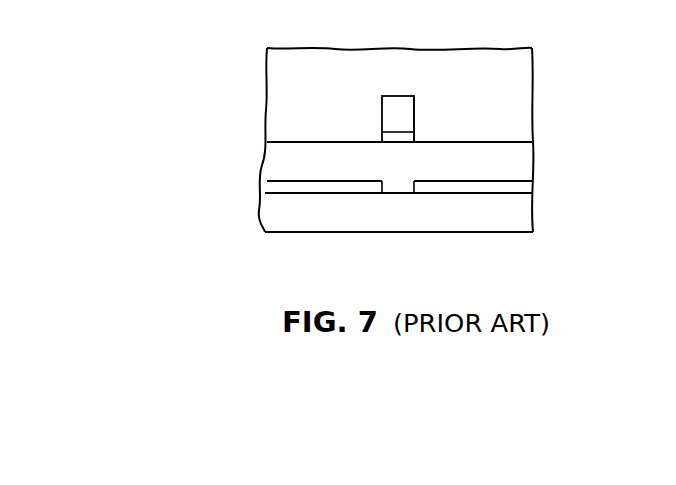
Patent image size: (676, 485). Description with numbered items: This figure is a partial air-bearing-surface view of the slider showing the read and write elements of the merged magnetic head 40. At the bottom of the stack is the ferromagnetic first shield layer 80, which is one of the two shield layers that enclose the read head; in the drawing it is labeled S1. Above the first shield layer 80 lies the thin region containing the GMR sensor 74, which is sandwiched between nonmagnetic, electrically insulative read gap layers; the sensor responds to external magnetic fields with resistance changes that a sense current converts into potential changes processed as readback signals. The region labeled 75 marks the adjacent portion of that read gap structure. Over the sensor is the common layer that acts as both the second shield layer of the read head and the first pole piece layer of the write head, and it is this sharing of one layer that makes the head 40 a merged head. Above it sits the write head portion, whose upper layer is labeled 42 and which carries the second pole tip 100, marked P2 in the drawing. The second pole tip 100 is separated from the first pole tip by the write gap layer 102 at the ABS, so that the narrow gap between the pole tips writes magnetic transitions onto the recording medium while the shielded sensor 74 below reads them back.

The merged magnetic head 40 is at (556, 61).
The dielectric layer 42 is at (266, 74).
The second pole tip 100 is at (411, 96).
The write gap layer 102 is at (397, 142).
The second pattern level P2 is at (413, 111).
The thin intermediate layer 75 is at (298, 191).
The GMR sensor 74 is at (397, 191).
The first shield layer 80 is at (516, 209).
The first substrate S1 is at (461, 214).